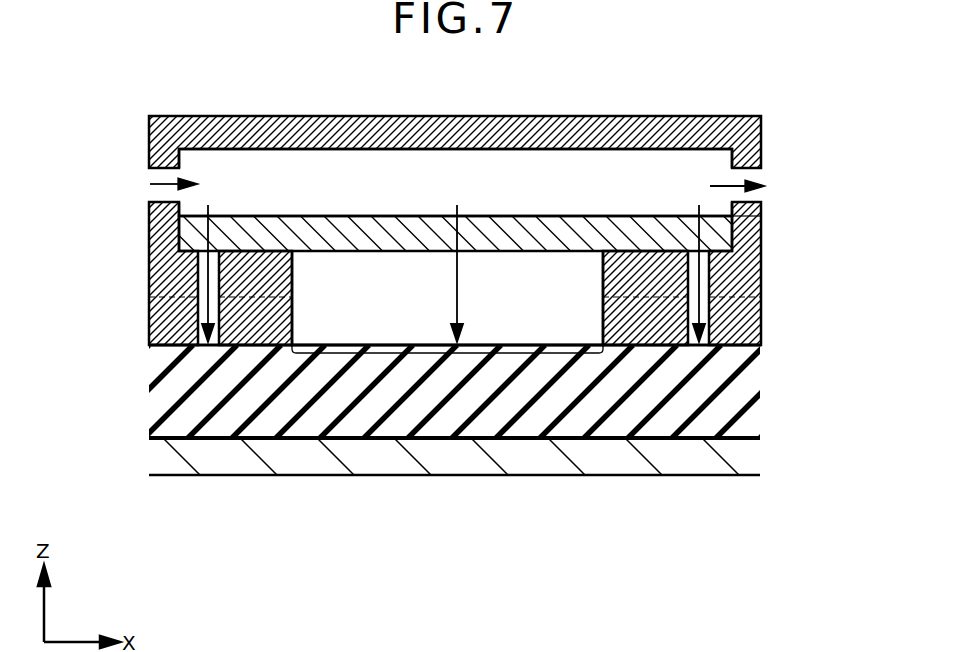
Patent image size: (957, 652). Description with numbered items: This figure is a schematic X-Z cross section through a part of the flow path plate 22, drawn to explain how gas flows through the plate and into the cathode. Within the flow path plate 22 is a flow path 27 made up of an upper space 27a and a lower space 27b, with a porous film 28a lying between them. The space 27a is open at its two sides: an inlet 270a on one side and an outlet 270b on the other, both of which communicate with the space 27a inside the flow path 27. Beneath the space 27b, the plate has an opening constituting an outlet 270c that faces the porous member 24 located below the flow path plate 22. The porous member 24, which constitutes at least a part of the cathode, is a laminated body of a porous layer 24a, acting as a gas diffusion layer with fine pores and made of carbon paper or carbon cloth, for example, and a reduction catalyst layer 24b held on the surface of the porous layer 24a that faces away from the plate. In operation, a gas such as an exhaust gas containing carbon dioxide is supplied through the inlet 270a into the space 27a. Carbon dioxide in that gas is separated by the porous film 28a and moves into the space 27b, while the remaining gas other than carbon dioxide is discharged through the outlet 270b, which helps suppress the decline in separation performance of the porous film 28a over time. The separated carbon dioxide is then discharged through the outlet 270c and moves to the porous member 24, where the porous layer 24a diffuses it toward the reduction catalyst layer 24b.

The flow path plate 22 is at (850, 110).
The flow path 27 is at (375, 135).
The space 27a is at (455, 182).
The space 27b is at (447, 298).
The porous film 28a is at (307, 216).
The inlet 270a is at (147, 170).
The outlet 270b is at (770, 173).
The outlet 270c is at (445, 355).
The porous member 24 is at (480, 410).
The porous layer 24a is at (776, 345).
The reduction catalyst layer 24b is at (776, 440).